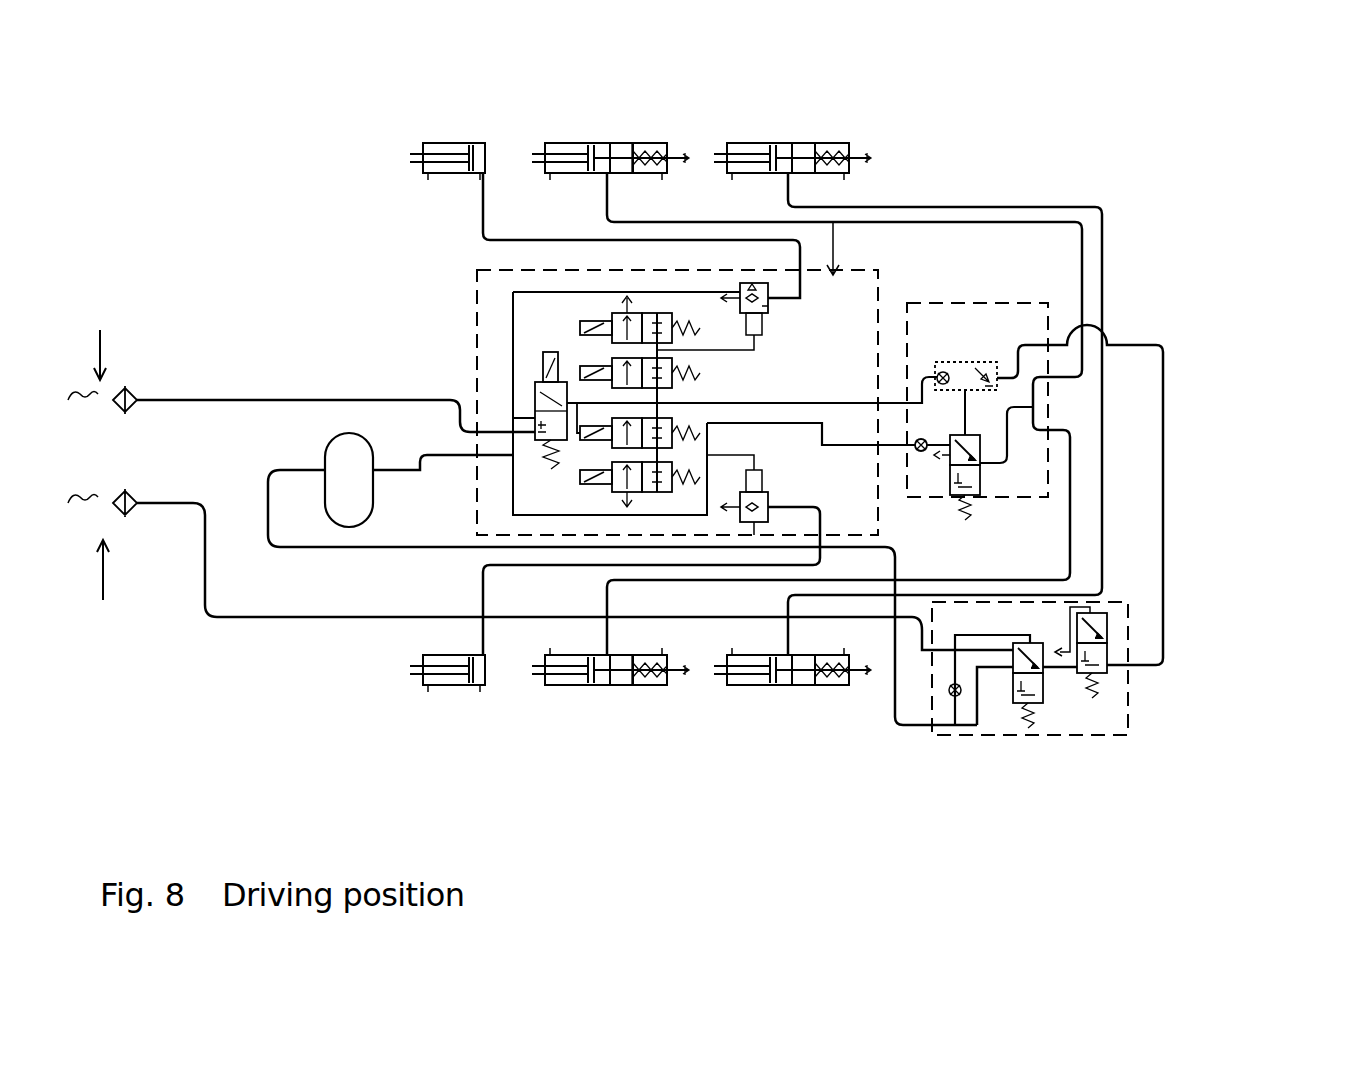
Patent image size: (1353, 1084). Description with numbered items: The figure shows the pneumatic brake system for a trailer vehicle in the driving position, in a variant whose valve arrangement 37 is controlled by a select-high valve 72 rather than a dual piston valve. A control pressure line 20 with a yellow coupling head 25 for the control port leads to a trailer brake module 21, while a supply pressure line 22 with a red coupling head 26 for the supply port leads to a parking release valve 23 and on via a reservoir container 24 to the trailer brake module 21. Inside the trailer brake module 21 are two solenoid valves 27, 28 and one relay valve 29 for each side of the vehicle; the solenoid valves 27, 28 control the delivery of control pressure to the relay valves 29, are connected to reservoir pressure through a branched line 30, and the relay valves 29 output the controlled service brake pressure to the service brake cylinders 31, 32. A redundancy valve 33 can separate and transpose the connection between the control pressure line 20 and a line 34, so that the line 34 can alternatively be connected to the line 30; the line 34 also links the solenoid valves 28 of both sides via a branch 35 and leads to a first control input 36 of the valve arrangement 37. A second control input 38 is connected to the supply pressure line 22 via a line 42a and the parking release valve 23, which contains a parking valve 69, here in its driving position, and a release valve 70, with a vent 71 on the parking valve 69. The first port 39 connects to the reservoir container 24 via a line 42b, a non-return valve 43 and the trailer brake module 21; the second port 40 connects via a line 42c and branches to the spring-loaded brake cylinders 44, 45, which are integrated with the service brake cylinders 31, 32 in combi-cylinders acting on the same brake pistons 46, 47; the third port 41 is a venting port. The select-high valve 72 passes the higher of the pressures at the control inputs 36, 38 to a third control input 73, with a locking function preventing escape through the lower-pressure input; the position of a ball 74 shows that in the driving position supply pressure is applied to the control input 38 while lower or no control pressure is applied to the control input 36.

The control pressure line 20 is at (222, 400).
The trailer brake module 21 is at (477, 275).
The supply pressure line 22 is at (233, 620).
The parking release valve 23 is at (1108, 737).
The reservoir container 24 is at (333, 502).
The yellow coupling head 25 is at (102, 356).
The red coupling head 26 is at (102, 564).
The solenoid valve 27 is at (582, 318).
The solenoid valve 28 is at (582, 368).
The relay valve 29 is at (740, 290).
The line 30 is at (400, 465).
The service brake cylinder 31 is at (590, 142).
The service brake cylinder 32 is at (778, 142).
The redundancy valve 33 is at (535, 383).
The line 34 is at (817, 422).
The branch 35 is at (662, 403).
The first control input 36 is at (928, 375).
The valve arrangement 37 is at (1000, 303).
The second control input 38 is at (1003, 377).
The first port 39 is at (918, 440).
The second port 40 is at (985, 470).
The third port 41 is at (938, 505).
The line 42a is at (1166, 520).
The line 42b is at (775, 535).
The line 42c is at (1010, 400).
The non-return valve 43 is at (938, 462).
The spring-loaded brake cylinder 44 is at (602, 142).
The spring-loaded brake cylinder 45 is at (805, 142).
The brake piston 46 is at (540, 142).
The brake piston 47 is at (735, 142).
The parking valve 69 is at (1142, 668).
The release valve 70 is at (1012, 690).
The vent 71 is at (1062, 657).
The select-high valve 72 is at (980, 362).
The third control input 73 is at (1040, 370).
The ball 74 is at (943, 360).